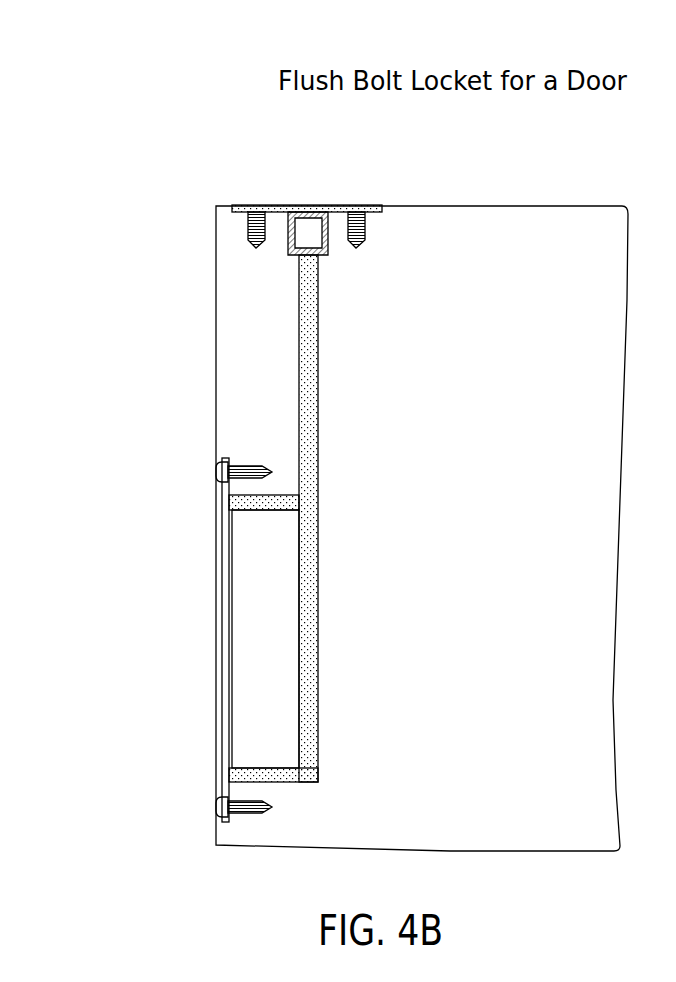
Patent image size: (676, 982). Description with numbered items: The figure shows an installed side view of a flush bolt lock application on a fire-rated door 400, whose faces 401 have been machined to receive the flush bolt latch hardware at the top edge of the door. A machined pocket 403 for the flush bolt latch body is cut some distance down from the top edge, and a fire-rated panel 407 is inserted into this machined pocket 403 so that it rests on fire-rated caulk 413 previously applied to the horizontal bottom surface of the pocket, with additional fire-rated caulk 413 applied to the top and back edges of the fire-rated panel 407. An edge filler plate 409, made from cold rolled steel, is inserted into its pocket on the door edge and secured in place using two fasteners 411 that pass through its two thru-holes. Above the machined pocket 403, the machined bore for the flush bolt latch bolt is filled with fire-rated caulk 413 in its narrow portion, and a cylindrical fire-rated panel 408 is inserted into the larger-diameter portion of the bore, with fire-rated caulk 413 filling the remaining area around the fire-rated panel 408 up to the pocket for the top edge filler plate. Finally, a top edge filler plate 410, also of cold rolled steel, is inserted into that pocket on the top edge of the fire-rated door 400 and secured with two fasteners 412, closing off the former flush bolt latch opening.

The fire-rated door 400 is at (592, 192).
The faces 401 is at (223, 432).
The machined pocket 403 is at (308, 782).
The fire-rated panel 407 is at (238, 588).
The fire-rated panel 408 is at (310, 237).
The edge filler plate 409 is at (212, 572).
The top edge filler plate 410 is at (278, 208).
The fasteners 411 is at (222, 472).
The fasteners 412 is at (255, 208).
The fire-rated caulk 413 is at (305, 212).